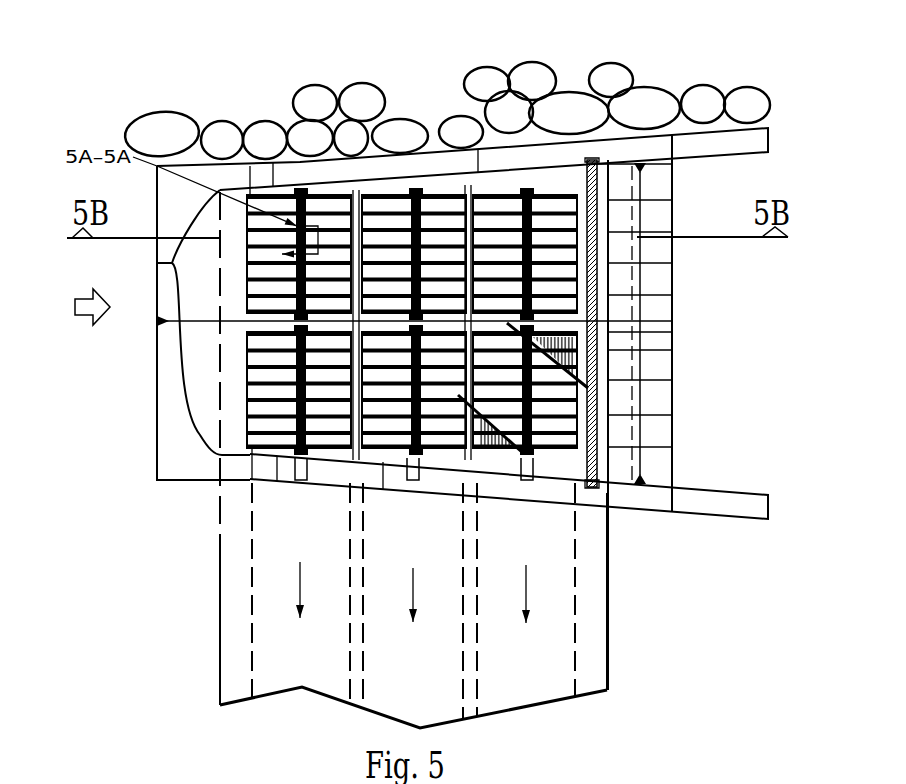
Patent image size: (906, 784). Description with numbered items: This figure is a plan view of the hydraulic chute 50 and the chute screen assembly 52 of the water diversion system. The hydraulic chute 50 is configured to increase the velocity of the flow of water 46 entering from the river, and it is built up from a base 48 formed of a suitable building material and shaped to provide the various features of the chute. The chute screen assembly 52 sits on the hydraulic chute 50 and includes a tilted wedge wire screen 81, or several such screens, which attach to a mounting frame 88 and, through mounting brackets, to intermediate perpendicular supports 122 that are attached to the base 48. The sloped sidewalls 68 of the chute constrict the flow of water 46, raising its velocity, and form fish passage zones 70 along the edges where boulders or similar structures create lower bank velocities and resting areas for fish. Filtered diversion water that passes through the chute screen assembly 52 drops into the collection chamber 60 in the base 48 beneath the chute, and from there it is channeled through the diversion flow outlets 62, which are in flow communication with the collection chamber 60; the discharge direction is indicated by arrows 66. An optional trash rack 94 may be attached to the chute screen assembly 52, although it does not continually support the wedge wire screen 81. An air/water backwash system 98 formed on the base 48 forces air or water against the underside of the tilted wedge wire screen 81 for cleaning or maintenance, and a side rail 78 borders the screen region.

The flow of water 46 is at (100, 327).
The base 48 is at (158, 481).
The hydraulic chute 50 is at (158, 263).
The chute screen assembly 52 is at (580, 166).
The collection chamber 60 is at (538, 515).
The diversion flow outlets 62 is at (510, 690).
The discharge flow 66 is at (526, 624).
The sloped sidewalls 68 is at (638, 498).
The fish passage zones 70 is at (770, 112).
The side frame rail 78 is at (653, 296).
The tilted wedge wire screen 81 is at (590, 360).
The mounting frame 88 is at (250, 433).
The trash rack 94 is at (567, 417).
The air/water backwash system 98 is at (530, 392).
The intermediate perpendicular supports 122 is at (527, 484).